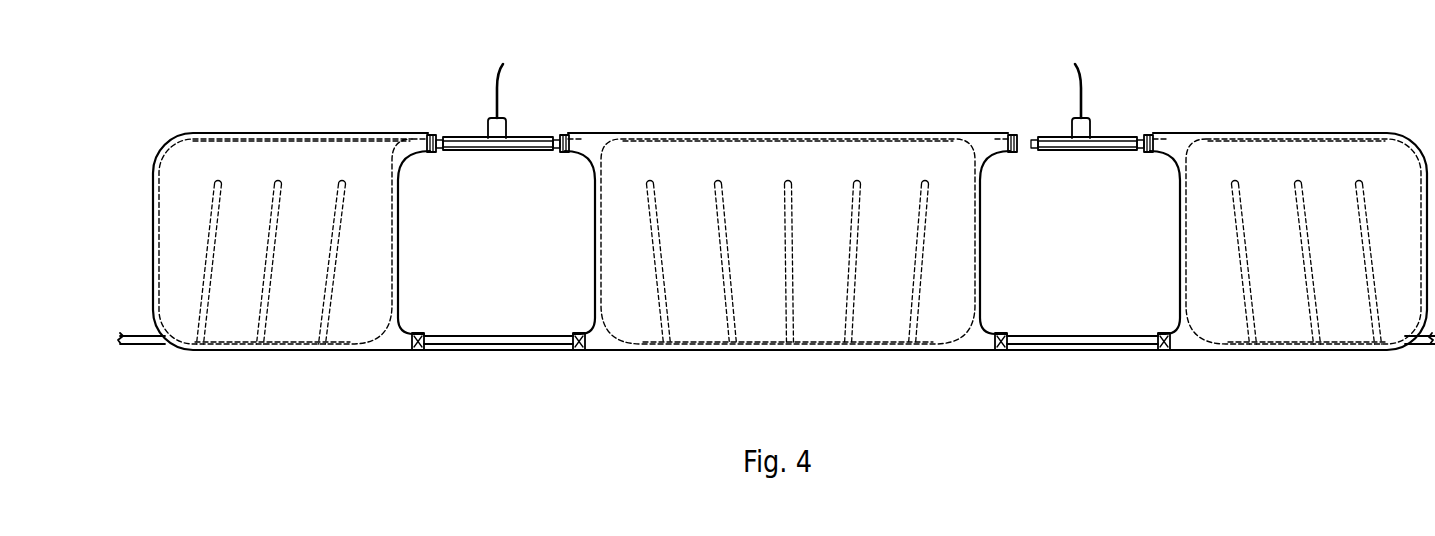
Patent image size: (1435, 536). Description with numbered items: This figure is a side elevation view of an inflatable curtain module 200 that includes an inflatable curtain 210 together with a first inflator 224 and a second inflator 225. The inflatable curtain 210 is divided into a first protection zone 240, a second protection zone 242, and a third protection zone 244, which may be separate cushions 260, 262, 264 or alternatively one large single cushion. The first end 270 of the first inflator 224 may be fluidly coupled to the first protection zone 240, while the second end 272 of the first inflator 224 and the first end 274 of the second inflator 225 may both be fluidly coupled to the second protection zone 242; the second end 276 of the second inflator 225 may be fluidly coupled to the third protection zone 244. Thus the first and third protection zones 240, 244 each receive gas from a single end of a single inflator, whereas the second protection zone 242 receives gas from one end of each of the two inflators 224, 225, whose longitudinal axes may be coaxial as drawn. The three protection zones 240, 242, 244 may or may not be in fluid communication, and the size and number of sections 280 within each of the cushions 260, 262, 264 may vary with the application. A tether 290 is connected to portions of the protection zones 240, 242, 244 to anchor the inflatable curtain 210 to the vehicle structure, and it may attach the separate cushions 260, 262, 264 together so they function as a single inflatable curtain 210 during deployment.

The inflatable curtain module 200 is at (794, 94).
The inflatable curtain 210 is at (864, 121).
The first inflator 224 is at (472, 139).
The second inflator 225 is at (1104, 139).
The first protection zone 240 is at (240, 278).
The second protection zone 242 is at (765, 312).
The third protection zone 244 is at (1290, 312).
The cushion 260 is at (345, 152).
The cushion 262 is at (758, 151).
The cushion 264 is at (1317, 152).
The first end of the first inflator 270 is at (428, 133).
The second end of the first inflator 272 is at (569, 133).
The first end of the second inflator 274 is at (1009, 133).
The second end of the second inflator 276 is at (1152, 133).
The sections 280 is at (209, 243).
The tether 290 is at (147, 344).